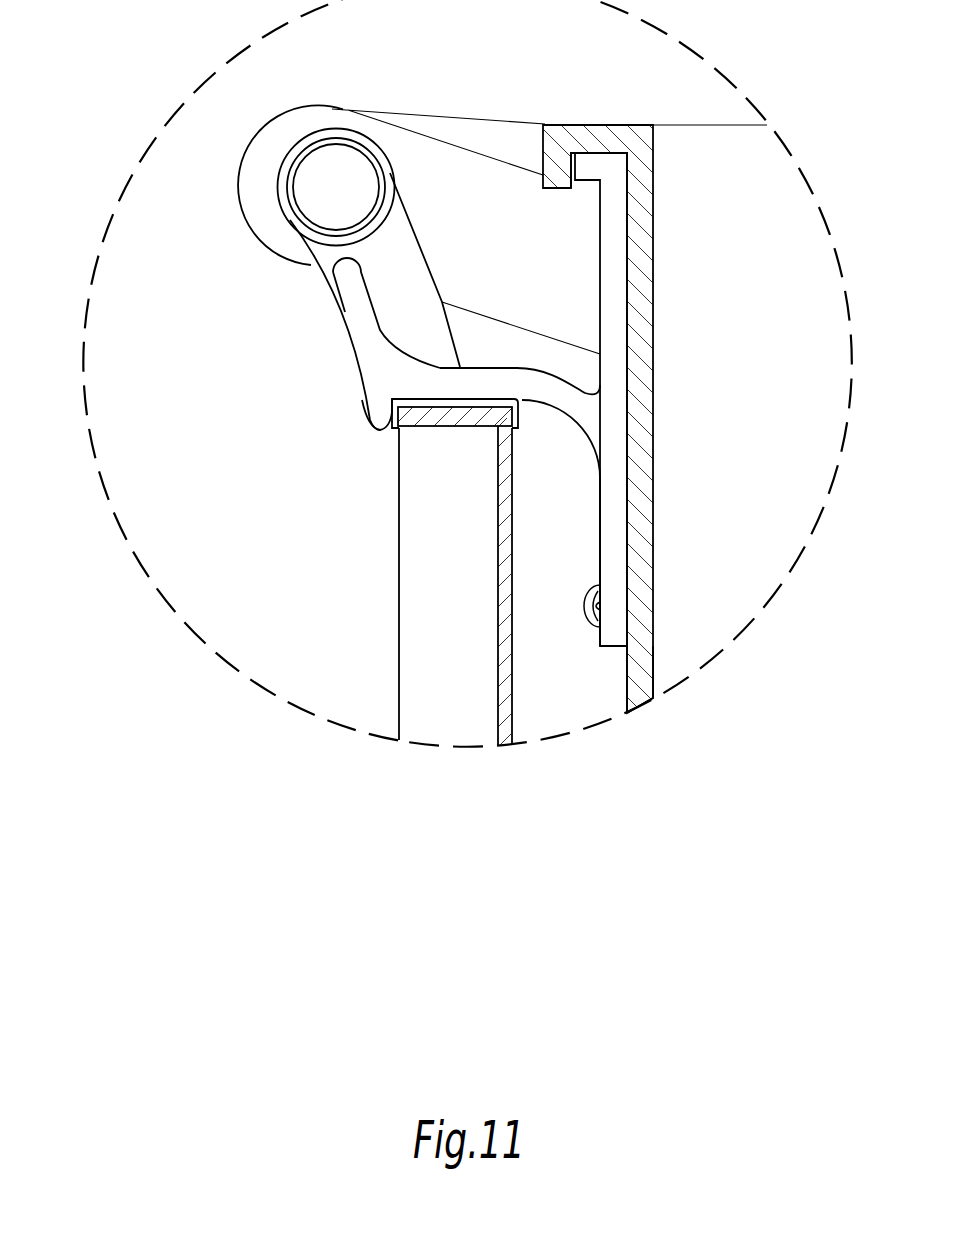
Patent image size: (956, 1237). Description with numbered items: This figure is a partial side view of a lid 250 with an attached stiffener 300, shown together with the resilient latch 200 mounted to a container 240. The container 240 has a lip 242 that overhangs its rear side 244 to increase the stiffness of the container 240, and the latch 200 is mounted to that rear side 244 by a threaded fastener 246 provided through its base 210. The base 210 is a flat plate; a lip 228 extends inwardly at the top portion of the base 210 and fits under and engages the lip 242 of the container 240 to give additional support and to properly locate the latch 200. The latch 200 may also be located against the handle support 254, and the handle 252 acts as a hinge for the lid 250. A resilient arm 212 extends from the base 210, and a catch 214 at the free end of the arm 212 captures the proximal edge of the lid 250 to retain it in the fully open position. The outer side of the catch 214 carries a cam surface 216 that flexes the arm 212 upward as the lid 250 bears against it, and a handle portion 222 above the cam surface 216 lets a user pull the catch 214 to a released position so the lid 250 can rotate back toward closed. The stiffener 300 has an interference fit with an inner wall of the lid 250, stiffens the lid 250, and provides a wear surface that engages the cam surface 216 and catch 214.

The resilient latch 200 is at (602, 496).
The base 210 is at (605, 544).
The resilient arm 212 is at (487, 367).
The catch 214 is at (400, 445).
The cam surface 216 is at (370, 420).
The handle portion 222 is at (340, 289).
The lip 228 is at (590, 183).
The container 240 is at (630, 701).
The lip of the container 242 is at (577, 127).
The rear side 244 is at (630, 673).
The threaded fastener 246 is at (588, 600).
The lid 250 is at (410, 543).
The handle 252 is at (313, 172).
The handle support 254 is at (420, 153).
The stiffener 300 is at (463, 422).